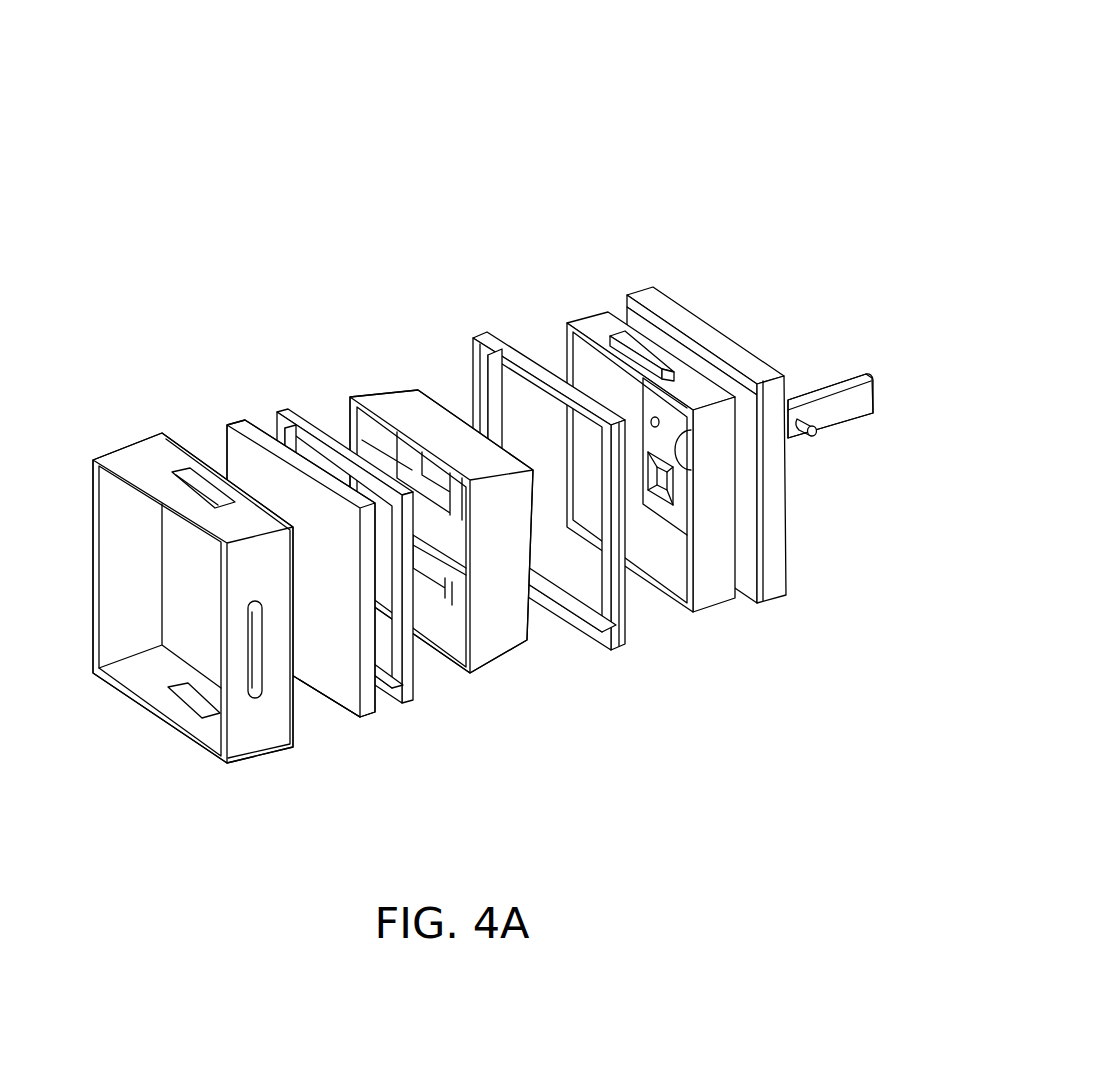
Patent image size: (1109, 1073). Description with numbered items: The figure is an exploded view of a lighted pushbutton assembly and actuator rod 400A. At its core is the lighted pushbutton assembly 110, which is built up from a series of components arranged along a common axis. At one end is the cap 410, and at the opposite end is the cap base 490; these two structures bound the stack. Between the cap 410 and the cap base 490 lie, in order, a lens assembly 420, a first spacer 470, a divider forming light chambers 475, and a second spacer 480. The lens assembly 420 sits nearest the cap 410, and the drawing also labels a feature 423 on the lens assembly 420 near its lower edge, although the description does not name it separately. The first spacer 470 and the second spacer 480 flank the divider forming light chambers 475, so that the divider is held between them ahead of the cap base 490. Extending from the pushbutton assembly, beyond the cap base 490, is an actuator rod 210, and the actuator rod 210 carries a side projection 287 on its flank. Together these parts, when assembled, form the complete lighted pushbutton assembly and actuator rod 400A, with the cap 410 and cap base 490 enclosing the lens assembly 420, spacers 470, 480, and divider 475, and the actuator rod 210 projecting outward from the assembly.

The lighted pushbutton assembly and actuator rod 400A is at (742, 126).
The lighted pushbutton assembly 110 is at (797, 617).
The cap 410 is at (123, 440).
The lens assembly 420 is at (232, 421).
The plate edge 423 is at (332, 700).
The first spacer 470 is at (280, 412).
The divider forming light chambers 475 is at (368, 397).
The second spacer 480 is at (490, 330).
The cap base 490 is at (697, 317).
The actuator rod 210 is at (834, 383).
The side projection 287 is at (814, 436).